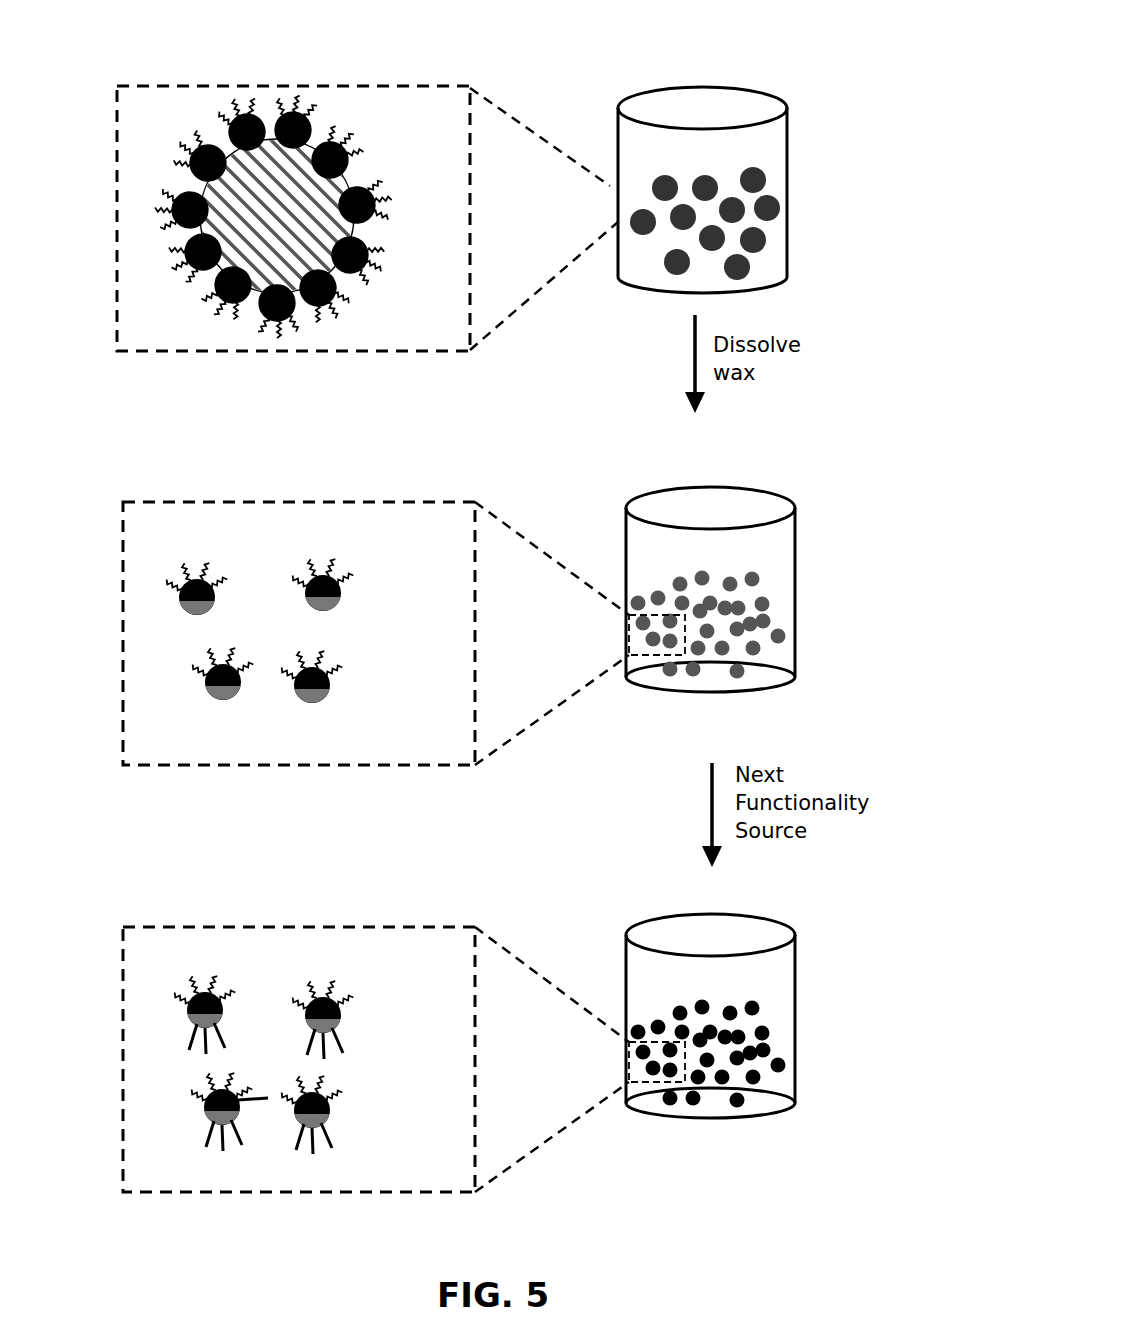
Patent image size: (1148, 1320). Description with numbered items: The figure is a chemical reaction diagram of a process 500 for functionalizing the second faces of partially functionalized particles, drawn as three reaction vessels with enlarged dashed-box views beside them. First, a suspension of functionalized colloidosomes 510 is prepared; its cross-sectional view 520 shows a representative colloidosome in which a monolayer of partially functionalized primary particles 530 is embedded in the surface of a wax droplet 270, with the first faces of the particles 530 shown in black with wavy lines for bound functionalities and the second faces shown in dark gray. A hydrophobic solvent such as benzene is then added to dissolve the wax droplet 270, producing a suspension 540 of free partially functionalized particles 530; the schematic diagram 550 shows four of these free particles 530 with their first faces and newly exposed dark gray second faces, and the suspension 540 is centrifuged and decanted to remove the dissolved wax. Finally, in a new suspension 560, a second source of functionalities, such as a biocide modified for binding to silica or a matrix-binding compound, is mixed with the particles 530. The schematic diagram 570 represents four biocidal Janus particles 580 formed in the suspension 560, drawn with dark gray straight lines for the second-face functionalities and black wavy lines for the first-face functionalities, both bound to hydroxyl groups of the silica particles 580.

The process 500 is at (850, 50).
The suspension of functionalized colloidosomes 510 is at (780, 237).
The cross-sectional view 520 is at (293, 227).
The wax droplet 270 is at (350, 181).
The partially functionalized primary particles 530 is at (362, 321).
The suspension of free partially functionalized particles 540 is at (795, 614).
The schematic diagram 550 is at (299, 633).
The new suspension 560 is at (795, 1041).
The schematic diagram 570 is at (299, 1059).
The biocidal Janus particles 580 is at (365, 1131).